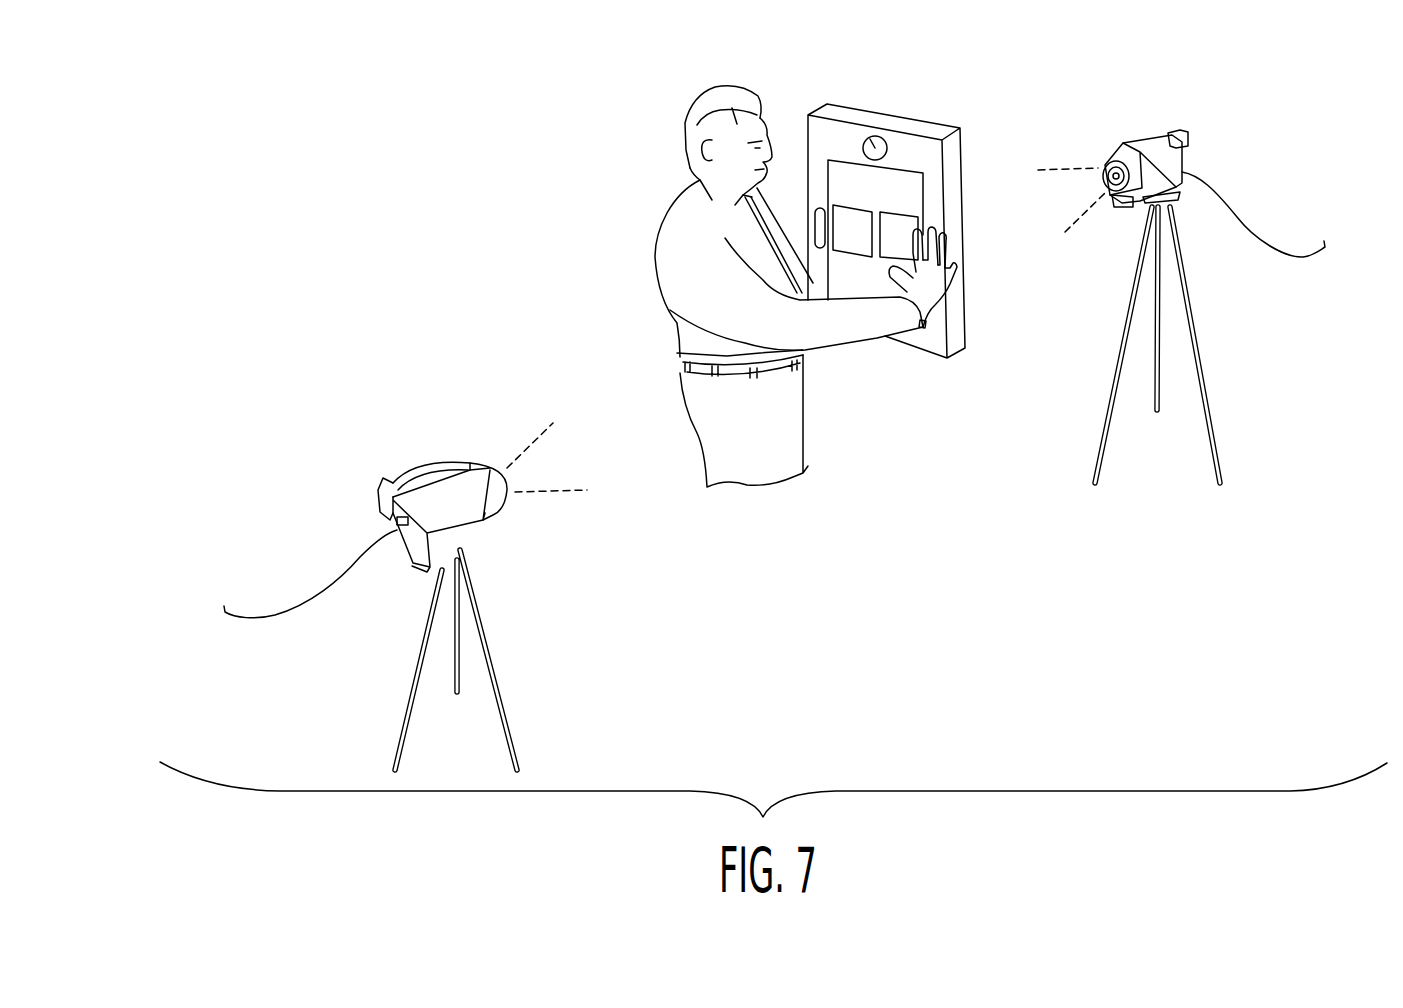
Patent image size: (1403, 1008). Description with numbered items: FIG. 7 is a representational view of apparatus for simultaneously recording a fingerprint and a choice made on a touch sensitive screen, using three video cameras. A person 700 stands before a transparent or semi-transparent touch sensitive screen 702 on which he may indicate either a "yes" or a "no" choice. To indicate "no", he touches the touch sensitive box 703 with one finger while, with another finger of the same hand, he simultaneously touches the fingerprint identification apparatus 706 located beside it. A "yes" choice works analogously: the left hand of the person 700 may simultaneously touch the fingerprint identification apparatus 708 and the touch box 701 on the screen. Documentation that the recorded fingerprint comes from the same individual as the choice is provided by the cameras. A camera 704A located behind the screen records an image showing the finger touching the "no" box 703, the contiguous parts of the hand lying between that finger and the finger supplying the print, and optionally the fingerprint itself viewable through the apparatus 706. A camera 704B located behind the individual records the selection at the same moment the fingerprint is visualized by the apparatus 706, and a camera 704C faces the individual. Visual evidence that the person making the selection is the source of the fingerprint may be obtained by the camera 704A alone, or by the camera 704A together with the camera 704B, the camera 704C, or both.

The person 700 is at (737, 257).
The touch box 701 is at (891, 211).
The touch sensitive screen 702 is at (893, 197).
The touch sensitive box 703 is at (908, 218).
The camera 704A is at (1147, 138).
The camera 704B is at (428, 482).
The camera 704C is at (872, 143).
The fingerprint identification apparatus 706 is at (944, 237).
The fingerprint identification apparatus 708 is at (813, 227).